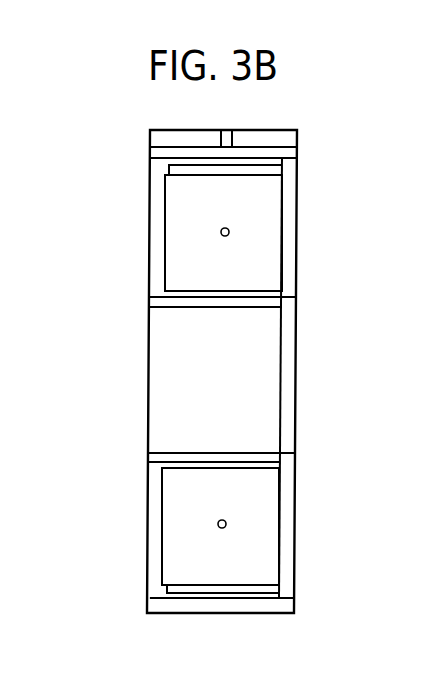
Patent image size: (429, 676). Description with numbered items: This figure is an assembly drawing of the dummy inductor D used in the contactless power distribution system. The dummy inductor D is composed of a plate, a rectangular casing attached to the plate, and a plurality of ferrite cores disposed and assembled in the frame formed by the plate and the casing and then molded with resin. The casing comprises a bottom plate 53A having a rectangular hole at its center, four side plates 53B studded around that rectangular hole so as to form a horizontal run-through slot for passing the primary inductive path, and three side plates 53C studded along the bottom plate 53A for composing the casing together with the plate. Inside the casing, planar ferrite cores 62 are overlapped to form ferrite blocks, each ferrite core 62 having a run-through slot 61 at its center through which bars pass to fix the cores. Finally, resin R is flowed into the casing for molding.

The bottom plate 53A is at (288, 342).
The side plates 53B is at (203, 302).
The side plates 53C is at (288, 152).
The run-through slot 61 is at (229, 229).
The planar ferrite core 62 is at (262, 268).
The resin R is at (232, 379).
The dummy inductor D is at (142, 198).